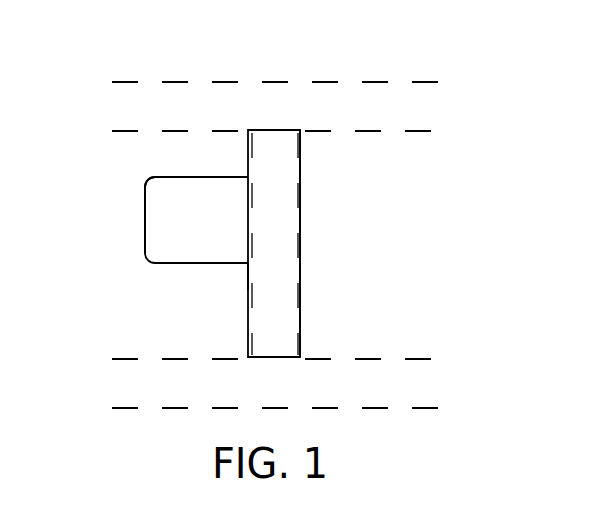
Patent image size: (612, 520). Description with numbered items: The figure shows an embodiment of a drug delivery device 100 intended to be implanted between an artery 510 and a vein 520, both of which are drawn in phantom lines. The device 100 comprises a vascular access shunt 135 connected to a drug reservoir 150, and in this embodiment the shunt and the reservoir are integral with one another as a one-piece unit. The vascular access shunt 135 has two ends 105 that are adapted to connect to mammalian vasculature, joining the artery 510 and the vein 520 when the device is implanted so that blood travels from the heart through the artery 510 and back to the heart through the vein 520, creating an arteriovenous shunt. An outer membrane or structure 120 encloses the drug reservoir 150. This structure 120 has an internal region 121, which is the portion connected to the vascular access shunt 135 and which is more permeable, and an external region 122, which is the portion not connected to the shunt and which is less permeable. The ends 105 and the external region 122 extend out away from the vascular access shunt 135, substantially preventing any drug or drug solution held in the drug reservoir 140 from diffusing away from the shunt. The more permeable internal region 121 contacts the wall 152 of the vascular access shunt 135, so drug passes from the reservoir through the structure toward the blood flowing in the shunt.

The drug delivery device 100 is at (313, 181).
The ends 105 is at (283, 129).
The outer membrane or structure 120 is at (138, 193).
The internal region 121 is at (245, 231).
The external region 122 is at (151, 173).
The vascular access shunt 135 is at (300, 310).
The drug reservoir 140 is at (183, 238).
The drug reservoir 150 is at (187, 172).
The wall 152 is at (247, 286).
The artery 510 is at (409, 113).
The vein 520 is at (162, 388).